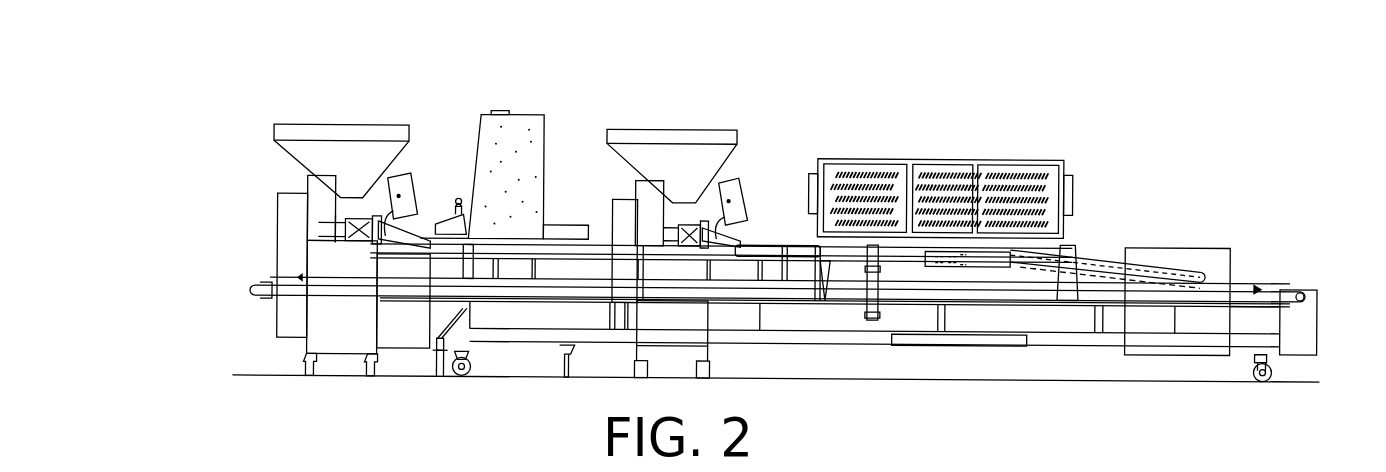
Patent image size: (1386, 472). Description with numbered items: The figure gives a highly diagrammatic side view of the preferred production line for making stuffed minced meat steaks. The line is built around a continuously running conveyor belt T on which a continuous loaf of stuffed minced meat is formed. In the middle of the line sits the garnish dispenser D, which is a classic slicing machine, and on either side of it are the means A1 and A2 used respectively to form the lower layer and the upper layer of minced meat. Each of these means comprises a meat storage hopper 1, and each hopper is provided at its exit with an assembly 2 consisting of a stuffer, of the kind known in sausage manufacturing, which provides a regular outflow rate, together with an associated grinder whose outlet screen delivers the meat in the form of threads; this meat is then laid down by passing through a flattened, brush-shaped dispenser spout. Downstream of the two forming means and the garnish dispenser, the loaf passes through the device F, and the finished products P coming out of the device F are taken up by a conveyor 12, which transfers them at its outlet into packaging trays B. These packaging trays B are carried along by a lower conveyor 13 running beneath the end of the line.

The meat storage hopper 1 is at (317, 160).
The assembly 2 is at (338, 225).
The conveyor 12 is at (1195, 272).
The lower conveyor 13 is at (410, 288).
The means for forming the lower layer A1 is at (294, 112).
The means for forming the upper layer A2 is at (636, 112).
The garnish dispenser D is at (487, 147).
The conveyor belt T is at (428, 245).
The device F is at (918, 161).
The finished products P is at (1098, 248).
The packaging trays B is at (1240, 282).